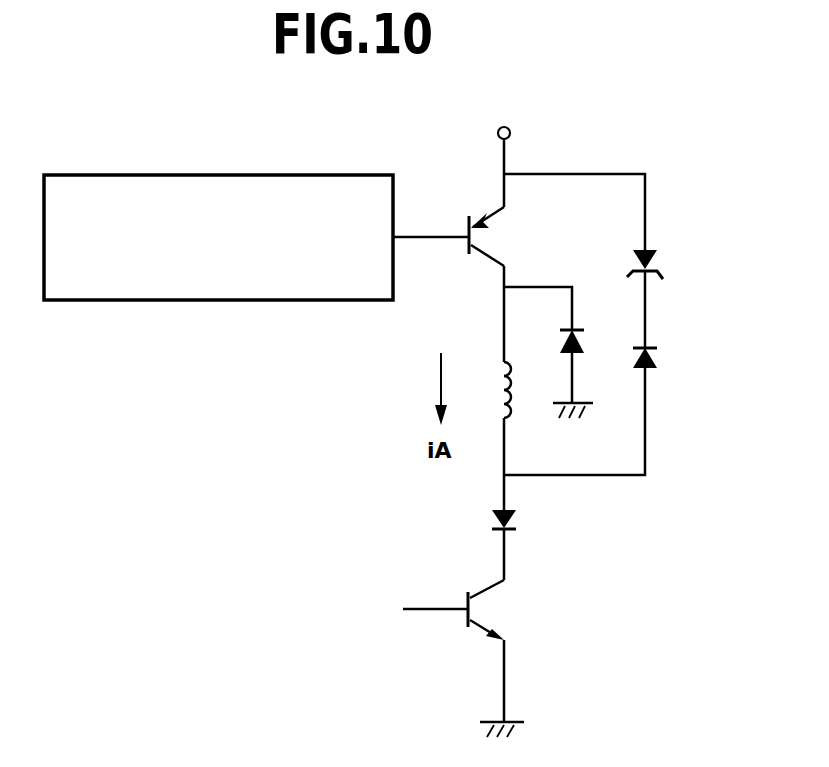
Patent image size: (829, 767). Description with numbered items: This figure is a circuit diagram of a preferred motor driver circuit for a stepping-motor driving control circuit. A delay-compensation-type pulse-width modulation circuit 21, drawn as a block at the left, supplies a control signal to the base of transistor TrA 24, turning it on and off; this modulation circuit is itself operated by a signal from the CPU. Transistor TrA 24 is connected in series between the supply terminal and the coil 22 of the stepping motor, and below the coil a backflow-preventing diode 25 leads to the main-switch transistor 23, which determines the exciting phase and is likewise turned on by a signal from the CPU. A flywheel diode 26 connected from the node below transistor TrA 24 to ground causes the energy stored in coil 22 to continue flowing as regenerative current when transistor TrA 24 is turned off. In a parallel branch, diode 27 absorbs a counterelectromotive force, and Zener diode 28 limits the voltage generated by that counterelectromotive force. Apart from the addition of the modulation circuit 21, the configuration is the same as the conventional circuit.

The delay-compensation-type pulse-width modulation circuit 21 is at (225, 301).
The coil 22 is at (506, 417).
The transistor Tr1 23 is at (474, 625).
The transistor TrA 24 is at (483, 253).
The backflow-preventing diode 25 is at (516, 521).
The flywheel diode 26 is at (582, 336).
The diode 27 is at (659, 361).
The Zener diode 28 is at (659, 262).